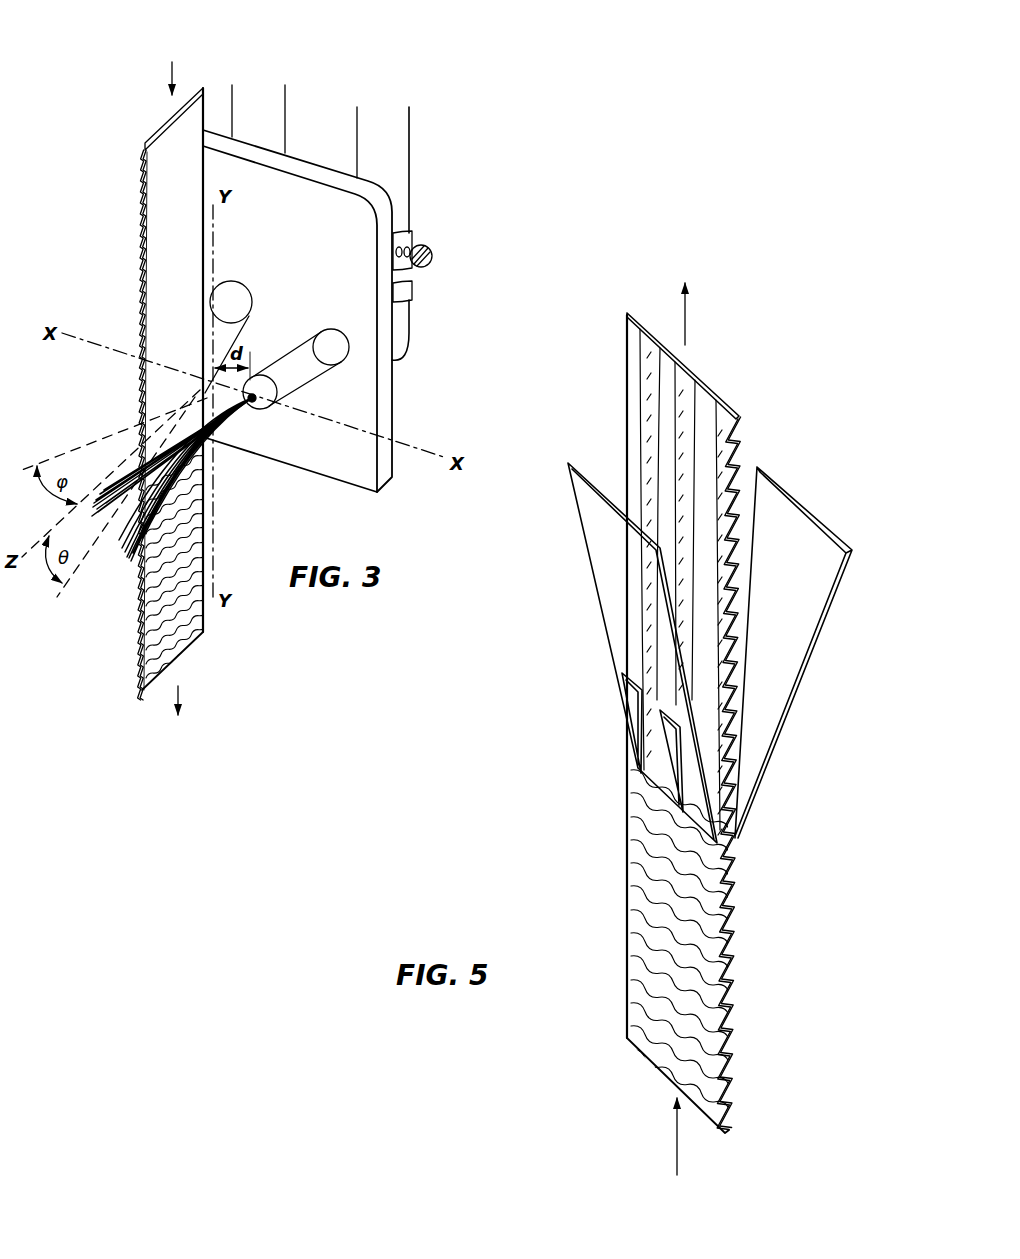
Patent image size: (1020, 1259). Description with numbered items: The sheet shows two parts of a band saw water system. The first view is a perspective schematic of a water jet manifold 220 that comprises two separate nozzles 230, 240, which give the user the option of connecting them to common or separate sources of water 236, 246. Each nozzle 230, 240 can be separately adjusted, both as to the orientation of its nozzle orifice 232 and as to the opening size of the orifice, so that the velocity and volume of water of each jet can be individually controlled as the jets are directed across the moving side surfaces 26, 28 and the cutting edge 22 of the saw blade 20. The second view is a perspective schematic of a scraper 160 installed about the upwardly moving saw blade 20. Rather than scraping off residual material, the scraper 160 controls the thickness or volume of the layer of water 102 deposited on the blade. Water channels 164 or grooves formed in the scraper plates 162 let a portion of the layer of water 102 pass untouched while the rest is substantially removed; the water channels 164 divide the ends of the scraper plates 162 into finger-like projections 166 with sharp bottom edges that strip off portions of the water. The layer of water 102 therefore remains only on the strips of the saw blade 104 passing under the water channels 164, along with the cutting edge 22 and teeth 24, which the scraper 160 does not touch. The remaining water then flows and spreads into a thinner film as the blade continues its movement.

In FIG. 3, the saw blade 20 is at (145, 140).
In FIG. 5, the saw blade 20 is at (697, 373).
In FIG. 3, the cutting edge 22 is at (146, 278).
In FIG. 5, the cutting edge 22 is at (738, 1045).
In FIG. 3, the teeth 24 is at (145, 617).
In FIG. 5, the teeth 24 is at (738, 940).
In FIG. 3, the side surface 26 is at (171, 208).
In FIG. 3, the side surface 28 is at (125, 207).
In FIG. 3, the layer of water 102 is at (192, 631).
In FIG. 5, the layer of water 102 is at (633, 1038).
In FIG. 3, the water jet manifold 220 is at (472, 72).
In FIG. 3, the nozzle 230 is at (322, 360).
In FIG. 3, the nozzle orifice 232 is at (262, 412).
In FIG. 3, the source of water 236 is at (409, 178).
In FIG. 3, the nozzle 240 is at (232, 312).
In FIG. 3, the source of water 246 is at (286, 128).
In FIG. 5, the scraper 160 is at (745, 255).
In FIG. 5, the strips of the saw blade 104 is at (682, 406).
In FIG. 5, the scraper plates 162 is at (800, 530).
In FIG. 5, the water channels 164 is at (682, 805).
In FIG. 5, the finger-like projections 166 is at (686, 752).